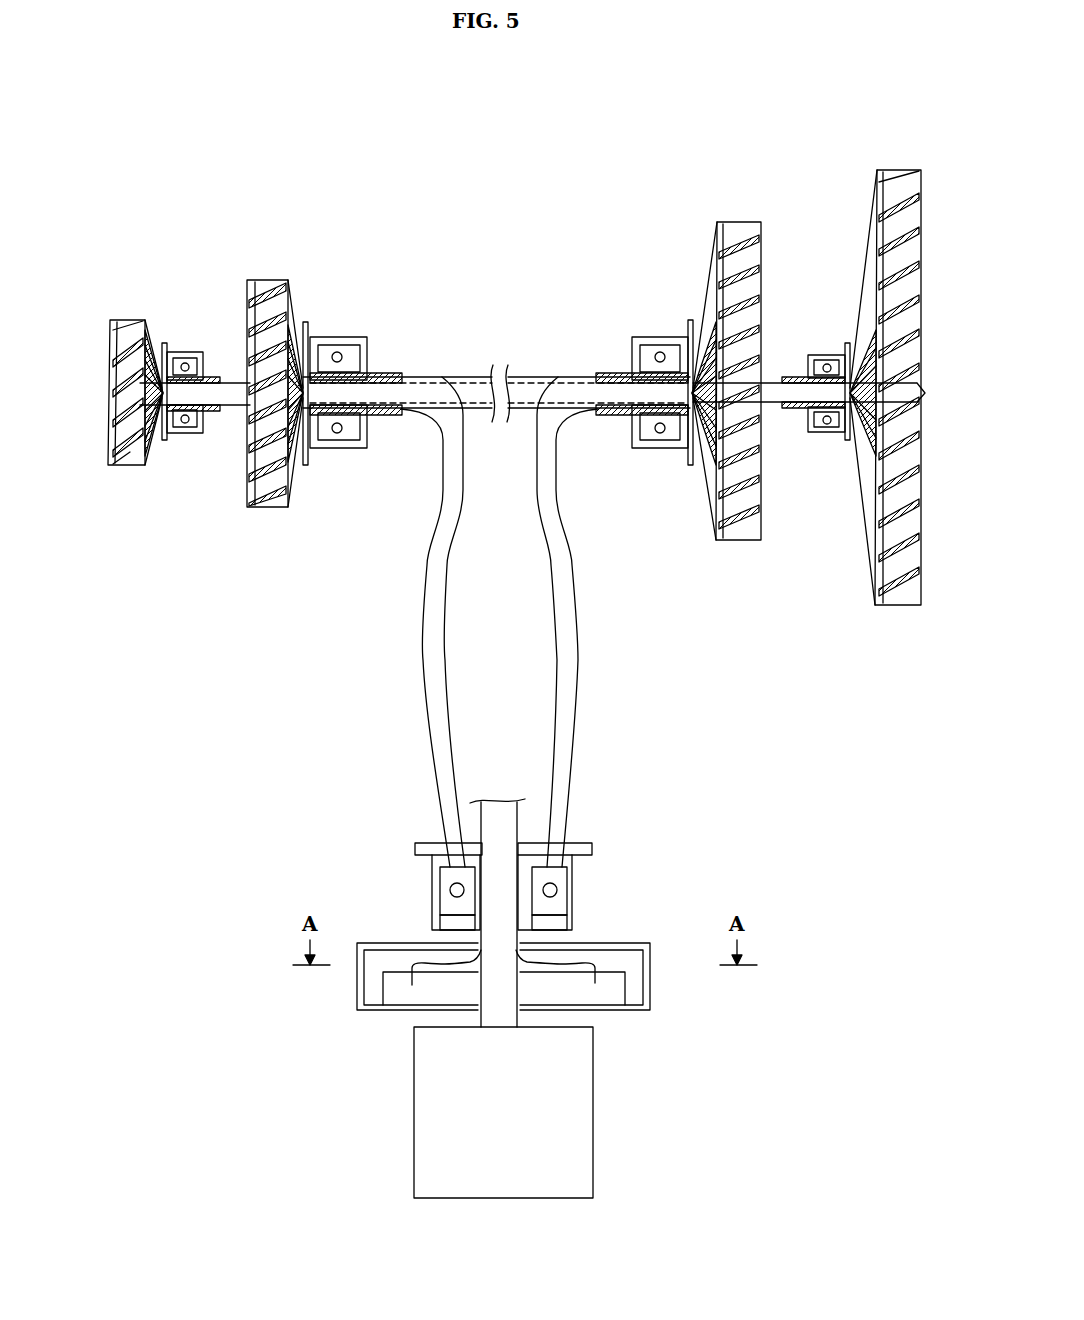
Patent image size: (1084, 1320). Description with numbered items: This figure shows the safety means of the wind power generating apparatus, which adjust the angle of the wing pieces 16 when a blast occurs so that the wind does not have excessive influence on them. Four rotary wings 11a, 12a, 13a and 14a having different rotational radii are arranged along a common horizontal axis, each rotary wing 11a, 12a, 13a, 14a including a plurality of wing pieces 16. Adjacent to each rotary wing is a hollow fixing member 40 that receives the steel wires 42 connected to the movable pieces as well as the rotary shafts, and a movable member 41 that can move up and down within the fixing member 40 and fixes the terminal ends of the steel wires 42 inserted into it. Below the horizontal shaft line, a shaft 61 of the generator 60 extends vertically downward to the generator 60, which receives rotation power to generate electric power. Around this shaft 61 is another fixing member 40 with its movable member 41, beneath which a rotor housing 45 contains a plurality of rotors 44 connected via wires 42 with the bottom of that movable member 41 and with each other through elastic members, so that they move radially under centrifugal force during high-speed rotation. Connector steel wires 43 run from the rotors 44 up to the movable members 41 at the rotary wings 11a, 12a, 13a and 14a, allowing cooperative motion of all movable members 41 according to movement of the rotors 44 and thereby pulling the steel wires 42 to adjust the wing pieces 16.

The rotary wing 11a is at (133, 318).
The rotary wing 12a is at (270, 279).
The rotary wing 13a is at (728, 221).
The rotary wing 14a is at (898, 607).
The wing piece 16 is at (108, 381).
The hollow fixing member 40 is at (164, 346).
The movable member 41 is at (205, 360).
The steel wire 42 is at (153, 441).
The connector steel wire 43 is at (237, 412).
The rotor 44 is at (388, 1005).
The rotor housing 45 is at (651, 1007).
The generator 60 is at (414, 1108).
The shaft 61 is at (480, 816).